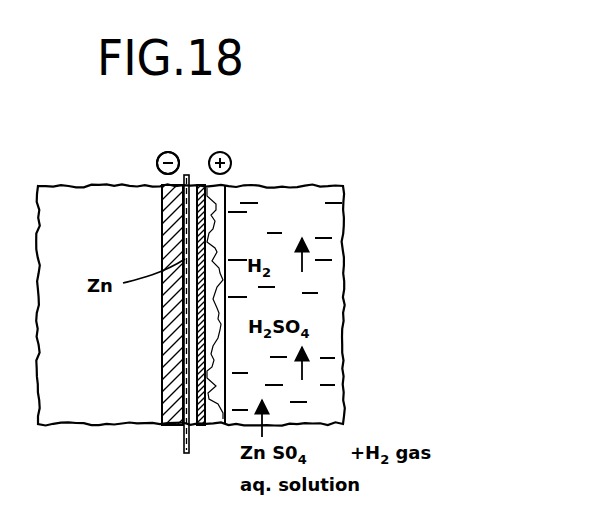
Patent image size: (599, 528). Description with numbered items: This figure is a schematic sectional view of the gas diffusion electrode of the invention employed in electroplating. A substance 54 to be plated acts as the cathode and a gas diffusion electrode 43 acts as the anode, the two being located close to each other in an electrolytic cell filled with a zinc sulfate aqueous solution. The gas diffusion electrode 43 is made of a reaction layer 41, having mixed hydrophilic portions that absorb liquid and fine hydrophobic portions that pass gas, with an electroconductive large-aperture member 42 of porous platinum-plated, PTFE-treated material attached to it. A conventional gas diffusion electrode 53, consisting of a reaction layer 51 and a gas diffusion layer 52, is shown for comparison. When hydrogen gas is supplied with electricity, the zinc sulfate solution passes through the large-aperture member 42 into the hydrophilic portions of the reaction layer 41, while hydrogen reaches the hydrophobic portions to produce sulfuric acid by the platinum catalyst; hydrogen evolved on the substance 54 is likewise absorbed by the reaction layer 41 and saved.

The reaction layer 41 is at (202, 186).
The electroconductive large-aperture member 42 is at (226, 200).
The gas diffusion electrode 43 is at (238, 226).
The reaction layer 51 is at (184, 455).
The gas diffusion layer 52 is at (162, 375).
The conventional gas diffusion electrode 53 is at (150, 222).
The substance to be plated 54 is at (162, 322).